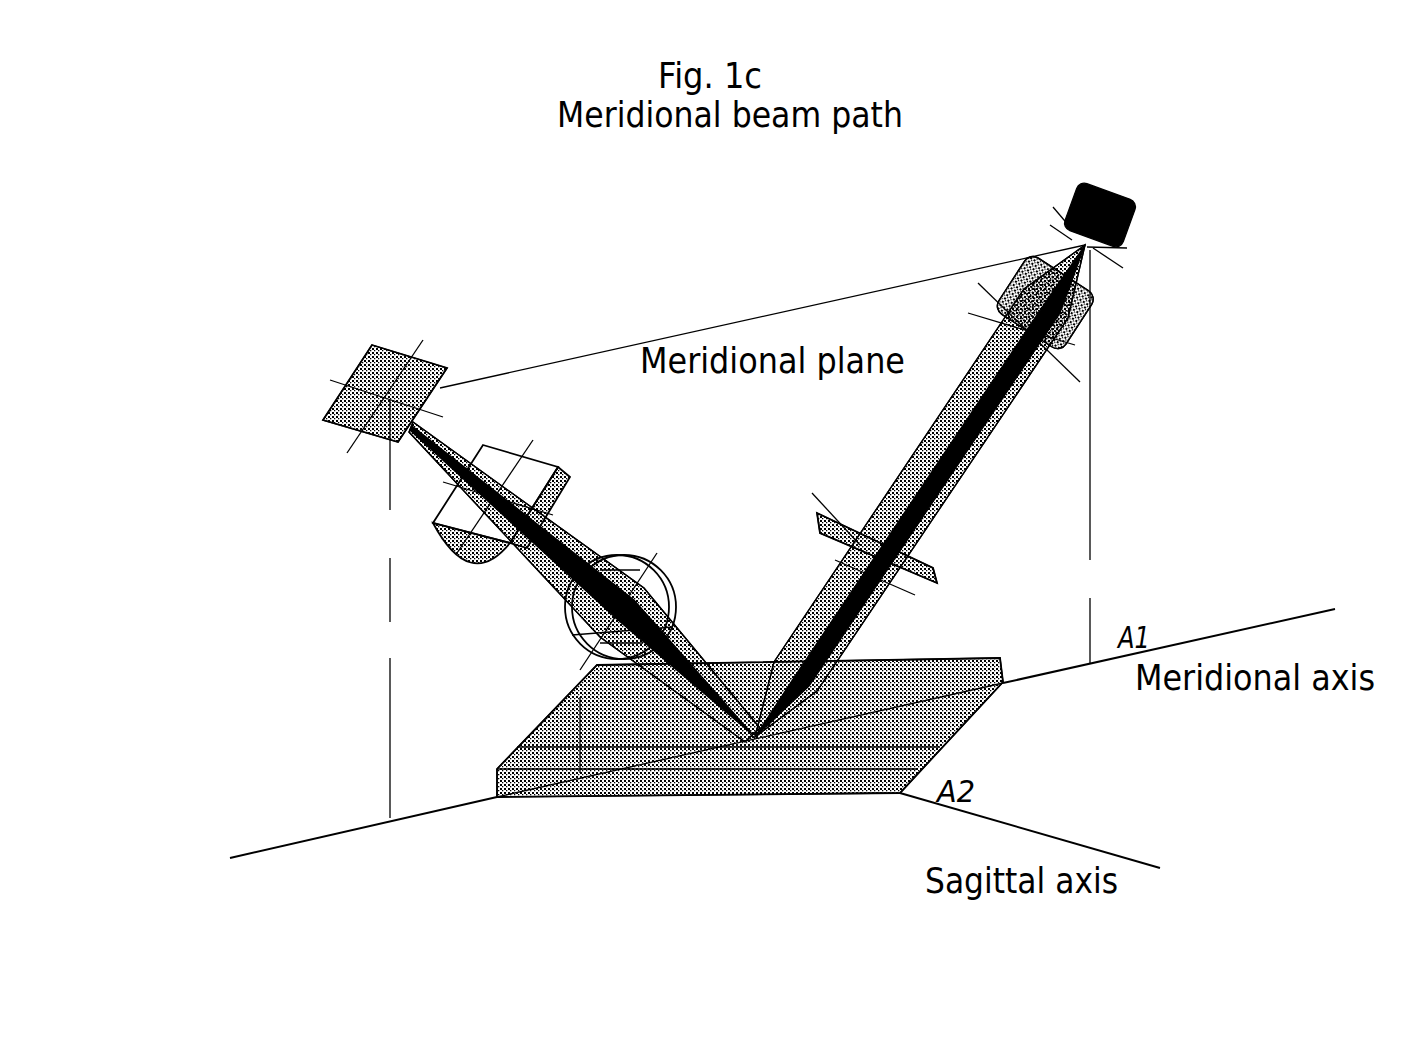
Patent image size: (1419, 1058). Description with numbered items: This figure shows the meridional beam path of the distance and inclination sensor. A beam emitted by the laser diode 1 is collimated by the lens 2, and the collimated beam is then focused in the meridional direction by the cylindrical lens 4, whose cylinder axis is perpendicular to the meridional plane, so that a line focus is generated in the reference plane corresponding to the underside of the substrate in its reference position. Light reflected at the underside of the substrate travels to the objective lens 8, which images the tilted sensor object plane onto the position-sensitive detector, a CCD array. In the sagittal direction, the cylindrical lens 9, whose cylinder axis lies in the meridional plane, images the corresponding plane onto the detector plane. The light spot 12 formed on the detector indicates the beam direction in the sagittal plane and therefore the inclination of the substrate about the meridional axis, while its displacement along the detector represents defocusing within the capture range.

The laser diode 1 is at (1205, 219).
The lens 2 is at (1144, 317).
The cylindrical lens 4 is at (1024, 546).
The objective lens 8 is at (577, 683).
The cylindrical lens 9 is at (365, 501).
The light spot 12 is at (374, 372).